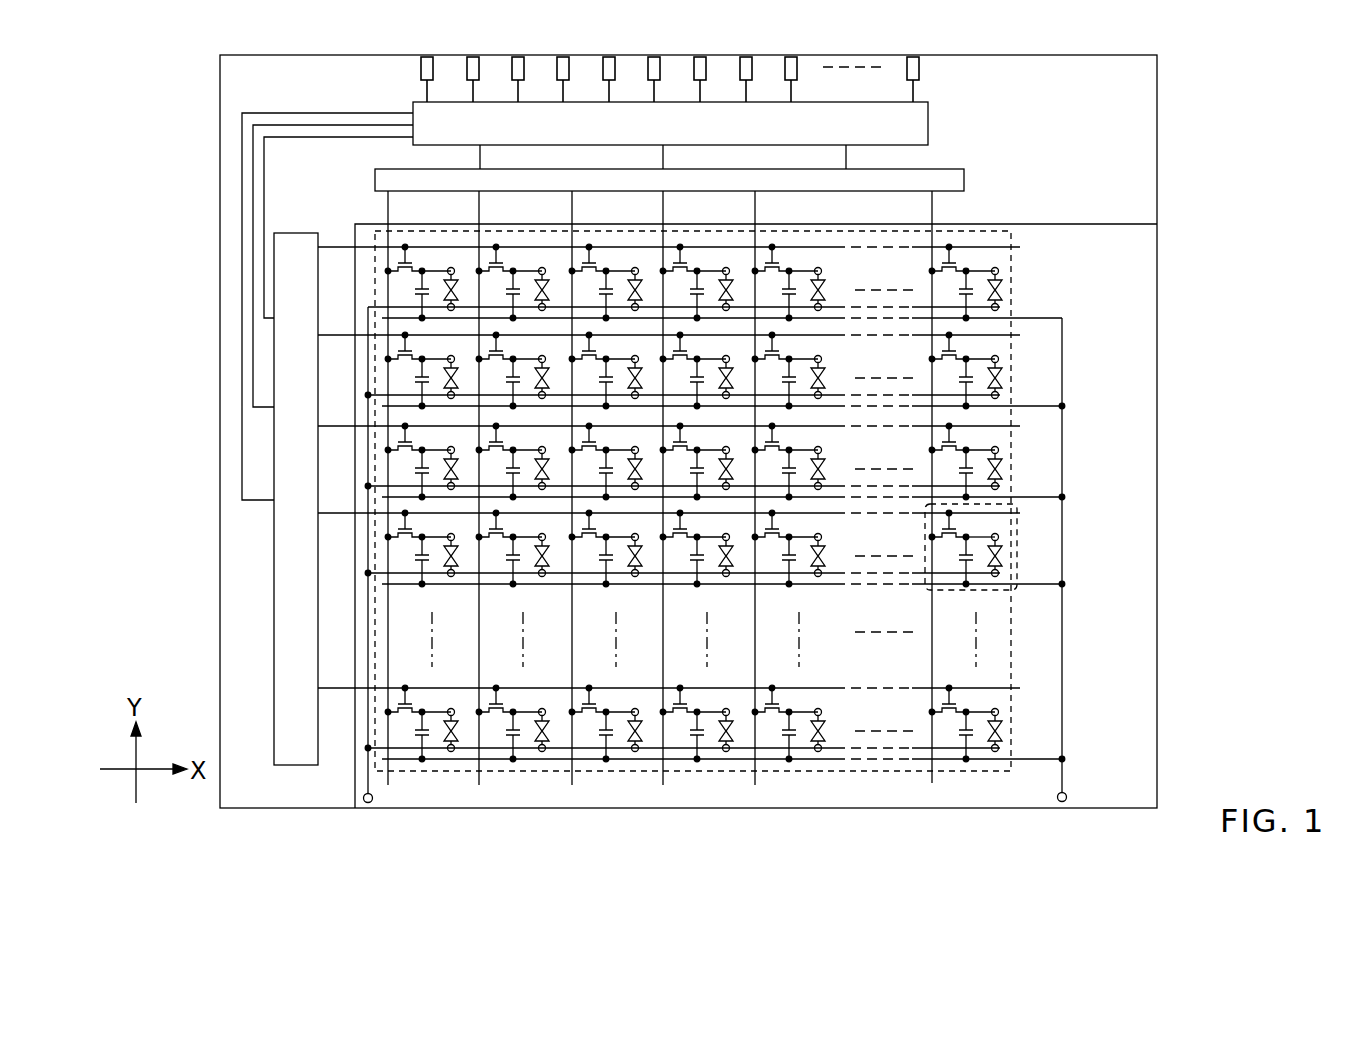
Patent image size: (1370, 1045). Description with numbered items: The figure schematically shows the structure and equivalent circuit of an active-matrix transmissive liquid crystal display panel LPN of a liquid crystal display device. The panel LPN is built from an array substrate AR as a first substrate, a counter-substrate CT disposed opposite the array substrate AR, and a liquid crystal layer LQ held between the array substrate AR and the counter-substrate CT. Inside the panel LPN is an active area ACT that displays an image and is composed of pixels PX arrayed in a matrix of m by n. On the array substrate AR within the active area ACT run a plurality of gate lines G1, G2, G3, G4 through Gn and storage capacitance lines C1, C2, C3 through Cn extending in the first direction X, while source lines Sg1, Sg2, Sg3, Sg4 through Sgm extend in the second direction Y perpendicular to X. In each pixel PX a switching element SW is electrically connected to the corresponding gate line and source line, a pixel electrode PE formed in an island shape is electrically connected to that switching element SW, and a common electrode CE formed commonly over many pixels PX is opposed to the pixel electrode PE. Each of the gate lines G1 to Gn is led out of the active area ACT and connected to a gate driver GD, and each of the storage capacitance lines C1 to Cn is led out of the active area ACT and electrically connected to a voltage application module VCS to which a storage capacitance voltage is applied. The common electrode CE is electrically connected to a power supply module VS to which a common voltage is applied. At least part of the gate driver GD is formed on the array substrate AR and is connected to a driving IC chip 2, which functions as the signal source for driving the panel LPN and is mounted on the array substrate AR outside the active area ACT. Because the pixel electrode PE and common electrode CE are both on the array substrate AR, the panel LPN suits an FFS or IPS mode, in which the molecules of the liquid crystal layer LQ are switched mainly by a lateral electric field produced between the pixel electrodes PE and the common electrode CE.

The liquid crystal display panel LPN is at (1188, 71).
The driving IC chip 2 is at (928, 112).
The counter-substrate CT is at (1125, 224).
The active area ACT is at (1011, 351).
The array substrate AR is at (290, 808).
The gate driver GD is at (273, 622).
The gate line G1 is at (340, 246).
The gate line G2 is at (340, 335).
The gate line G3 is at (340, 424).
The gate line G4 is at (340, 513).
The gate line Gn is at (340, 687).
The source line Sg1 is at (389, 211).
The source line Sg2 is at (480, 211).
The source line Sg3 is at (573, 211).
The source line Sg4 is at (664, 211).
The source line Sgm is at (936, 211).
The storage capacitance line C1 is at (1040, 318).
The storage capacitance line C2 is at (1040, 406).
The storage capacitance line C3 is at (1040, 496).
The storage capacitance line Cn is at (1040, 758).
The pixel PX is at (984, 554).
The switching element SW is at (930, 526).
The pixel electrode PE is at (998, 535).
The liquid crystal layer LQ is at (1003, 549).
The common electrode CE is at (999, 574).
The power supply module VS is at (372, 801).
The voltage application module VCS is at (1066, 795).